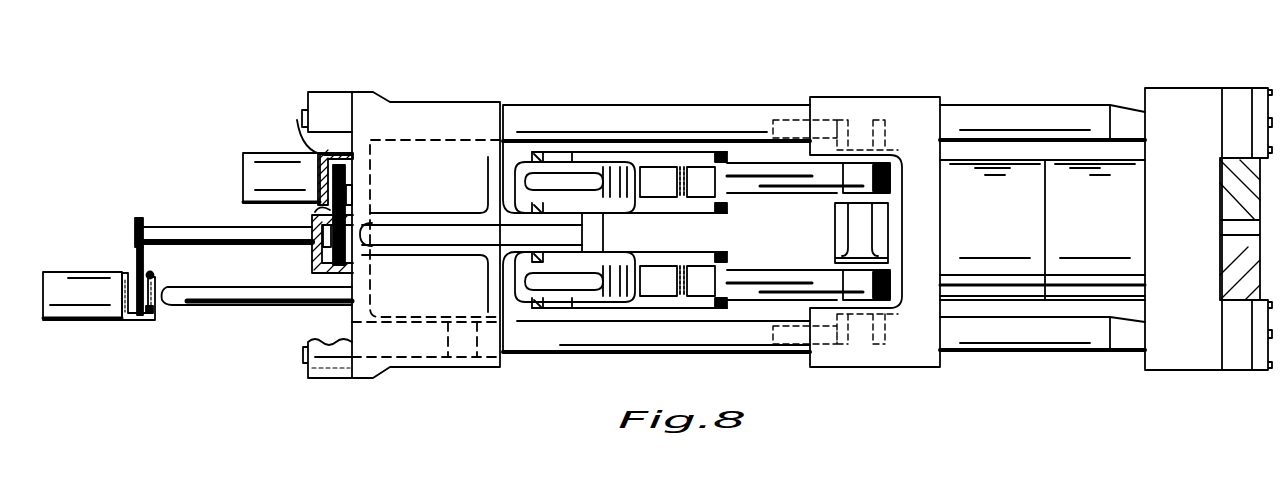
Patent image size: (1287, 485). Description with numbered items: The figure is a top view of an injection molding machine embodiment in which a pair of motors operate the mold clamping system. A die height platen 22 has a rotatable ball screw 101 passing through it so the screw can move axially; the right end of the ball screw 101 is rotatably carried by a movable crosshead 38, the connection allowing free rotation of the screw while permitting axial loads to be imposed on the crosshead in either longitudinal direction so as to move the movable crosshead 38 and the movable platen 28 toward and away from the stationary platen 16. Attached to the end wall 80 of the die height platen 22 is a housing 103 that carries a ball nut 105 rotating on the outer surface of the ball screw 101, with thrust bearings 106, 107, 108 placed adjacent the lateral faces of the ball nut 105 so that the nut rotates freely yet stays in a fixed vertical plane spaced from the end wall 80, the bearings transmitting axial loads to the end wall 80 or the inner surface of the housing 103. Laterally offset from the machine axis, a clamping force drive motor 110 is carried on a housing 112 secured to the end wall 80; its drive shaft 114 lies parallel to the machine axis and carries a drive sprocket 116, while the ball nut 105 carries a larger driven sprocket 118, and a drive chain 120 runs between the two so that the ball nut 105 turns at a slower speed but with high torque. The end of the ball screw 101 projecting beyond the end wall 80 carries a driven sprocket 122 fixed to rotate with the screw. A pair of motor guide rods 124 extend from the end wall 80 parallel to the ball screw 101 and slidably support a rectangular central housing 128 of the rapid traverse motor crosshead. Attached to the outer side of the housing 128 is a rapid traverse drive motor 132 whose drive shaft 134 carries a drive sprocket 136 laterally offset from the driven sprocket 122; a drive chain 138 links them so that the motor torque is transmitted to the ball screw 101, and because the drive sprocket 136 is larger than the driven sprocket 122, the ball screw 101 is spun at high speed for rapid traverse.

The stationary platen 16 is at (1180, 97).
The die height platen 22 is at (378, 104).
The movable platen 28 is at (906, 106).
The movable crosshead 38 is at (435, 140).
The end wall 80 is at (346, 150).
The ball screw 101 is at (173, 227).
The housing 103 is at (352, 280).
The ball nut 105 is at (353, 217).
The thrust bearing 106 is at (212, 226).
The thrust bearing 107 is at (357, 257).
The thrust bearing 108 is at (313, 252).
The clamping force drive motor 110 is at (247, 163).
The housing 112 is at (308, 130).
The drive shaft 114 is at (307, 155).
The drive sprocket 116 is at (346, 176).
The driven sprocket 118 is at (318, 207).
The drive chain 120 is at (348, 193).
The driven sprocket 122 is at (137, 220).
The motor guide rods 124 is at (270, 307).
The central housing 128 is at (152, 282).
The rapid traverse drive motor 132 is at (70, 320).
The drive shaft 134 is at (128, 315).
The drive sprocket 136 is at (158, 317).
The drive chain 138 is at (135, 258).